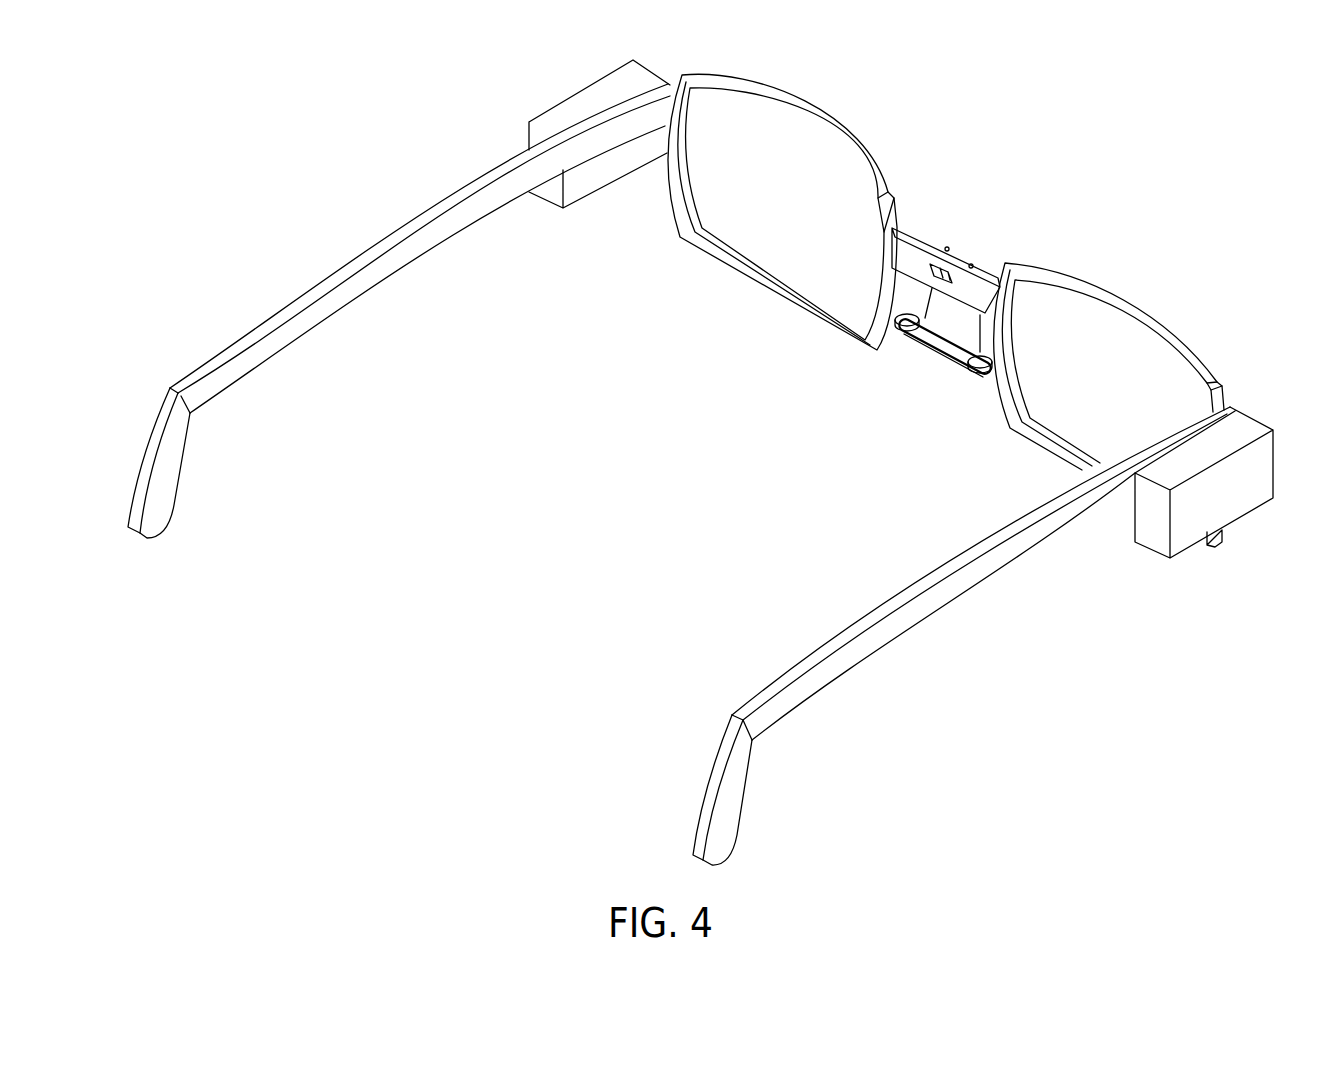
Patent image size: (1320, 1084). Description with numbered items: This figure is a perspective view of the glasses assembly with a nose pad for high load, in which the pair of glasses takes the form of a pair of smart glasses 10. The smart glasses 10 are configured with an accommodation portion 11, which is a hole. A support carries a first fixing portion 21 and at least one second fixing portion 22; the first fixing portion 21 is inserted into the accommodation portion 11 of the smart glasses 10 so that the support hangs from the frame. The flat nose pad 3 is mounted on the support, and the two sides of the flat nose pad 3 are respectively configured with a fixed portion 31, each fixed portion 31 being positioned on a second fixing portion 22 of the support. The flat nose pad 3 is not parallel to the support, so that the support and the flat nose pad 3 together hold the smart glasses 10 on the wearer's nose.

The smart glasses 10 is at (876, 133).
The accommodation portion 11 is at (950, 260).
The first fixing portion 21 is at (940, 257).
The second fixing portion 22 is at (918, 337).
The flat nose pad 3 is at (950, 350).
The fixed portion 31 is at (900, 317).